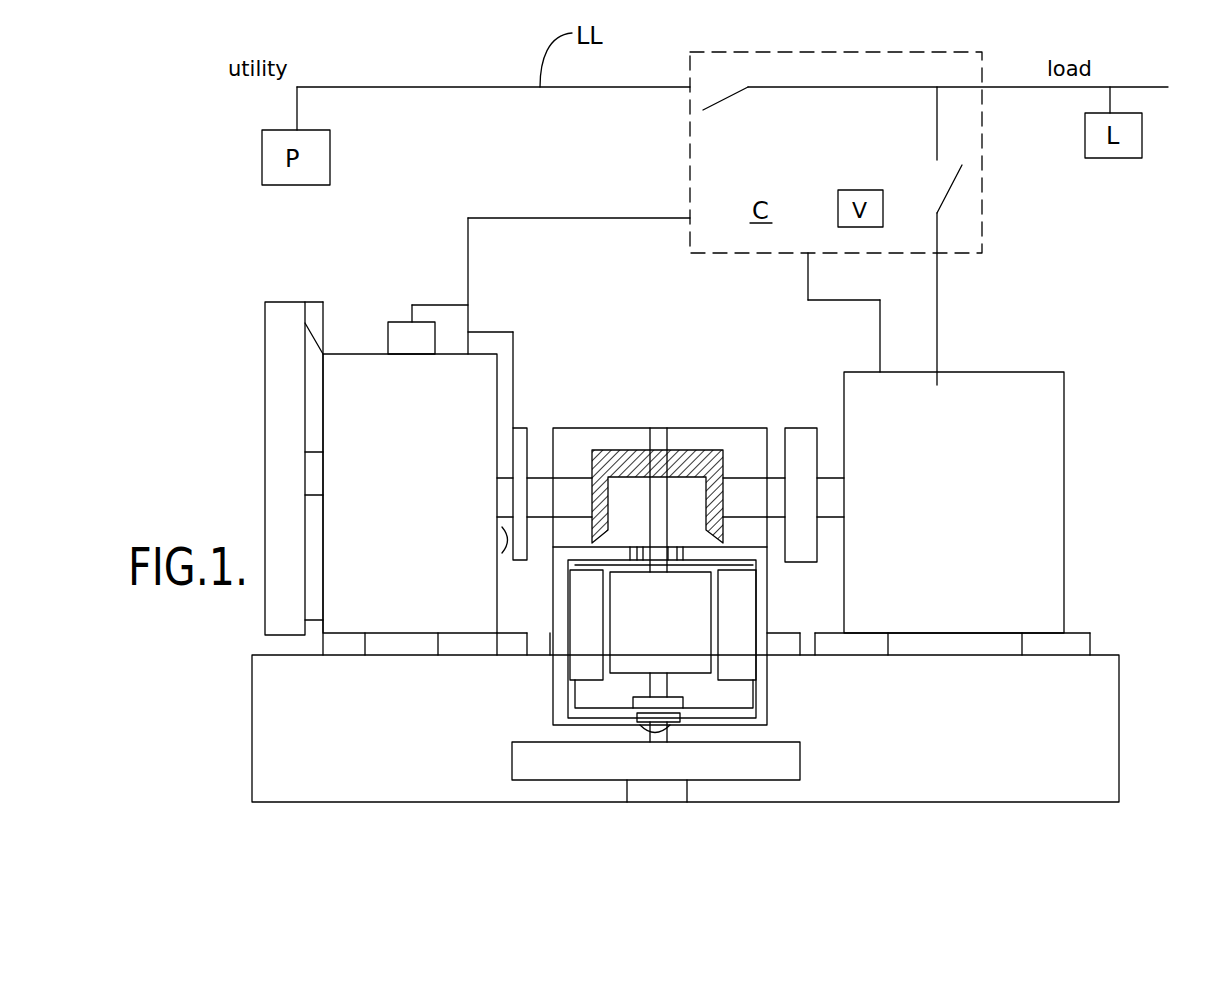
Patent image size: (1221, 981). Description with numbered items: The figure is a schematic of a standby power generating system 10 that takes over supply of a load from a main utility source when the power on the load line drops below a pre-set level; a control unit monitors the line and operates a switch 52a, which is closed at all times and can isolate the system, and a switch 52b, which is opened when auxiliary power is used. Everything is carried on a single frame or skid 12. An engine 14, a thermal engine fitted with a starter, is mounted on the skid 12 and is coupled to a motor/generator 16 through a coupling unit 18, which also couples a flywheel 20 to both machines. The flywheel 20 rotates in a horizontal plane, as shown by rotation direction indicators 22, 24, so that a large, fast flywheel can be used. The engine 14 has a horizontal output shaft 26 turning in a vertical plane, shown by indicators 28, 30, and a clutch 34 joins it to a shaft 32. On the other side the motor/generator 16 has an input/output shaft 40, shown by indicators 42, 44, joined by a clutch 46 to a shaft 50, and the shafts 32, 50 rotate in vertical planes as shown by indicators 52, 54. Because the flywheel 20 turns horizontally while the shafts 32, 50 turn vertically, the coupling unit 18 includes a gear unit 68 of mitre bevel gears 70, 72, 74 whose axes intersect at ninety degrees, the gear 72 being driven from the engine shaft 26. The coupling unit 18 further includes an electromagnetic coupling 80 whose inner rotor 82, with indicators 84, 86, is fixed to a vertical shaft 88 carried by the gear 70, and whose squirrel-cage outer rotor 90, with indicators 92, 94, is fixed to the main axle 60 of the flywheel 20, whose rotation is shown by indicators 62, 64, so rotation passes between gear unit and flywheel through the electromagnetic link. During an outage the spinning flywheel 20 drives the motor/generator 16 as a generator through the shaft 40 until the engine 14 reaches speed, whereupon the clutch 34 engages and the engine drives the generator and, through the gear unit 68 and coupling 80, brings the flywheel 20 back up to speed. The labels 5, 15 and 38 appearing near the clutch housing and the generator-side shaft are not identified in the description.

The clutch housing 5 is at (671, 458).
The standby power generating system 10 is at (303, 248).
The frame or skid 12 is at (374, 751).
The engine 14 is at (381, 416).
The overrunning clutch 15 is at (686, 357).
The motor/generator 16 is at (978, 424).
The coupling unit 18 is at (779, 401).
The flywheel 20 is at (800, 762).
The rotation direction indicator 22 is at (787, 753).
The rotation direction indicator 24 is at (525, 761).
The output shaft 26 is at (505, 545).
The rotation indicator 28 is at (505, 478).
The rotation indicator 30 is at (505, 517).
The shaft 32 is at (583, 488).
The clutch 34 is at (523, 428).
The clutch output shaft 38 is at (745, 520).
The input/output shaft 40 is at (833, 485).
The rotation indicator 42 is at (828, 470).
The rotation indicator 44 is at (833, 507).
The clutch 46 is at (803, 438).
The shaft 50 is at (747, 470).
The rotation direction indicator 52 is at (562, 483).
The switch 52a is at (1044, 236).
The switch 52b is at (662, 121).
The rotation direction indicator 54 is at (587, 508).
The main axle 60 is at (700, 733).
The rotation direction indicator 62 is at (645, 733).
The rotation direction indicator 64 is at (683, 717).
The gear unit 68 is at (704, 436).
The gear 70 is at (628, 455).
The gear 72 is at (597, 452).
The gear 74 is at (703, 505).
The electromagnetic coupling 80 is at (555, 673).
The inner rotor 82 is at (668, 668).
The rotation direction indicator 84 is at (623, 583).
The rotation direction indicator 86 is at (703, 582).
The shaft 88 is at (660, 515).
The outer rotor 90 is at (757, 663).
The rotation direction indicator 92 is at (560, 573).
The rotation direction indicator 94 is at (755, 575).